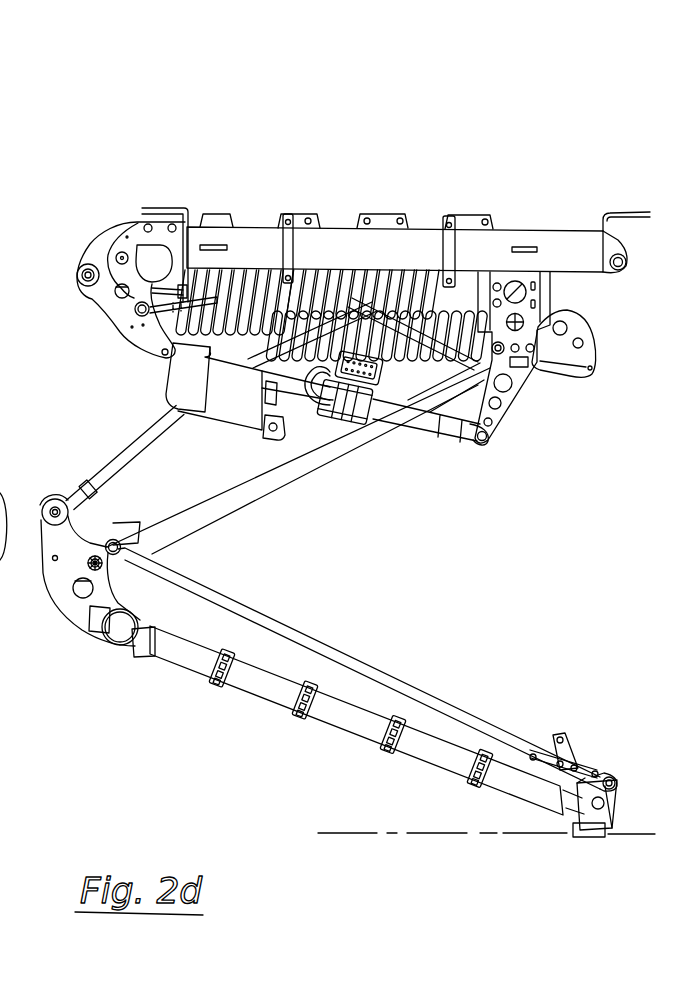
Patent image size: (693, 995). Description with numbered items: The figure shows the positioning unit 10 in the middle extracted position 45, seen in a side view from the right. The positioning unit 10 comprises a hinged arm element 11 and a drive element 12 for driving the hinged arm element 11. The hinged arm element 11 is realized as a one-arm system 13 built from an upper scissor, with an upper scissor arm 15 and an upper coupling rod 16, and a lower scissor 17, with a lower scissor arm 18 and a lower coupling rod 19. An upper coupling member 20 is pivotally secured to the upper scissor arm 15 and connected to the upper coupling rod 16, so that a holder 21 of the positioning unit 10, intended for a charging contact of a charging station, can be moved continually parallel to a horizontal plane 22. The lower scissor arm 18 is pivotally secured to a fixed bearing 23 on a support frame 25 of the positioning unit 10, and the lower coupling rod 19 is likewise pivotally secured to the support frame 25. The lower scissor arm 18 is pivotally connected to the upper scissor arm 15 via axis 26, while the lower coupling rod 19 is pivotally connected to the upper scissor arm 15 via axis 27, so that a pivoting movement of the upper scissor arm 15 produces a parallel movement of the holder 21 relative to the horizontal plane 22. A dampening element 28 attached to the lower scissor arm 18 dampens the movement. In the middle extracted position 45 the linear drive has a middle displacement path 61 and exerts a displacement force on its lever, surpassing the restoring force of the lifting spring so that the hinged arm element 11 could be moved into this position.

The positioning unit 10 is at (584, 190).
The hinged arm element 11 is at (548, 532).
The drive element 12 is at (147, 366).
The one-arm system 13 is at (503, 557).
The upper scissor arm 15 is at (267, 687).
The upper coupling rod 16 is at (318, 643).
The lower scissor 17 is at (0, 443).
The lower scissor arm 18 is at (288, 458).
The lower coupling rod 19 is at (153, 440).
The upper coupling member 20 is at (613, 790).
The holder 21 is at (598, 828).
The horizontal plane 22 is at (357, 833).
The fixed bearing 23 is at (527, 318).
The support frame 25 is at (336, 252).
The axis 26 is at (140, 550).
The axis 27 is at (8, 497).
The dampening element 28 is at (388, 360).
The middle extracted position 45 is at (533, 181).
The middle displacement path 61 is at (396, 425).